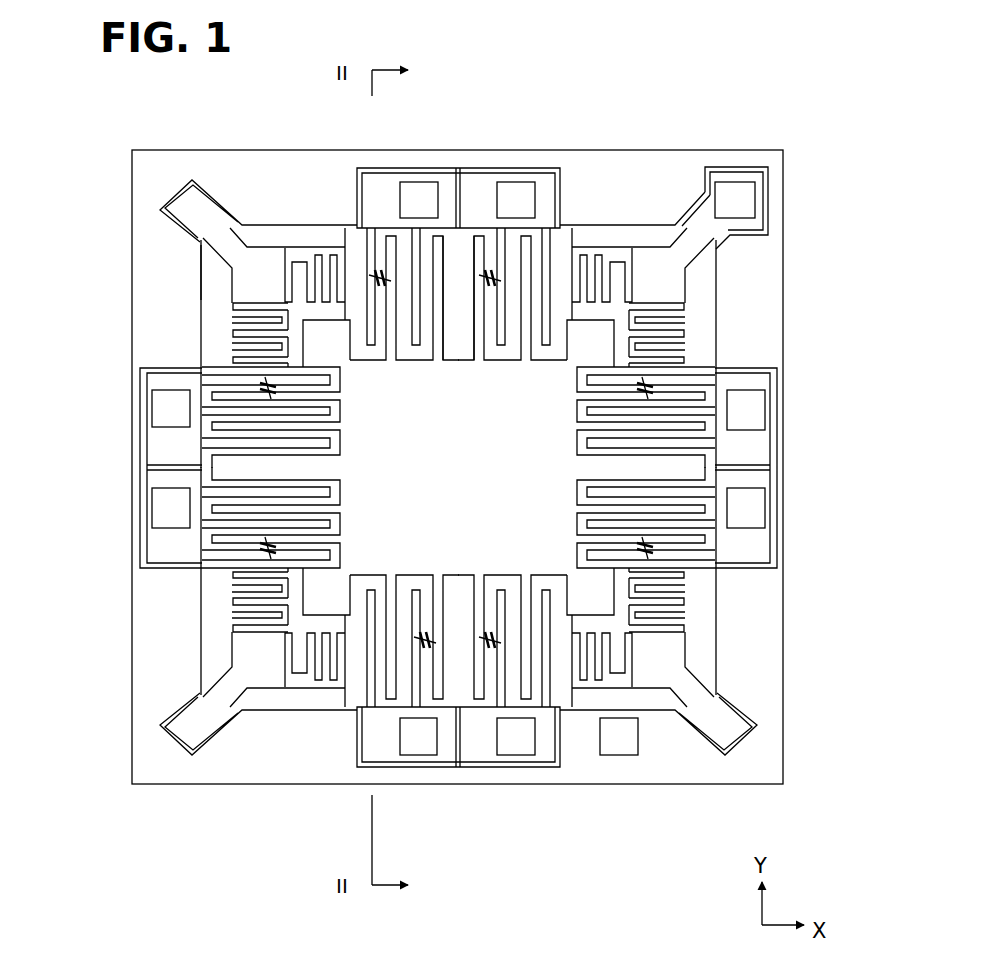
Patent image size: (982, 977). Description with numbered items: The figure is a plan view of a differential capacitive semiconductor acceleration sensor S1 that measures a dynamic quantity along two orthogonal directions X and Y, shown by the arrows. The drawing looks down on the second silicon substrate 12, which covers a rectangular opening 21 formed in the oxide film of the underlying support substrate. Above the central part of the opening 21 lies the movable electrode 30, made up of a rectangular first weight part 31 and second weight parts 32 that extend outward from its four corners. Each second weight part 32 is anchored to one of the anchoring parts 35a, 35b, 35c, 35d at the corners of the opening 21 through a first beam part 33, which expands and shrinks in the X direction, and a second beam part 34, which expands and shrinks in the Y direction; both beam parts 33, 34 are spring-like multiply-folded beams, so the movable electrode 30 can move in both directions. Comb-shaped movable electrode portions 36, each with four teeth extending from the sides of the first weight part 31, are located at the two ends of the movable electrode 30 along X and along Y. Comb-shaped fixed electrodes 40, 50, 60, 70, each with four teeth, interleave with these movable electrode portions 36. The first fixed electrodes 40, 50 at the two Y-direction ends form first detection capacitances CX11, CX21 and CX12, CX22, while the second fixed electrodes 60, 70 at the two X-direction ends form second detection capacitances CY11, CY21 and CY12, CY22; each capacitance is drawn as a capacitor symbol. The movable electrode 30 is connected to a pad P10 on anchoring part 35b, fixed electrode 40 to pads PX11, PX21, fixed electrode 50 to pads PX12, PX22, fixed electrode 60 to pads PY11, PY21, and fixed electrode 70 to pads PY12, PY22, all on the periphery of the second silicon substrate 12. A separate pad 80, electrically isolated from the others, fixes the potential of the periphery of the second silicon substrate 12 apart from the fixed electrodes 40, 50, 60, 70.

The acceleration sensor S1 is at (457, 476).
The second silicon substrate 12 is at (250, 144).
The opening 21 is at (206, 280).
The movable electrode 30 is at (518, 487).
The first weight part 31 is at (541, 402).
The second weight parts 32 is at (336, 350).
The first beam parts 33 is at (318, 256).
The second beam parts 34 is at (240, 328).
The anchoring part 35a is at (193, 196).
The anchoring part 35b is at (700, 200).
The anchoring part 35c is at (722, 760).
The anchoring part 35d is at (203, 760).
The movable electrode portions 36 is at (454, 292).
The fixed electrode 40 is at (495, 650).
The fixed electrode 50 is at (385, 286).
The fixed electrode 60 is at (655, 390).
The fixed electrode 70 is at (262, 392).
The pad 80 is at (625, 752).
The pad P10 is at (738, 190).
The pad PX11 is at (418, 746).
The pad PX12 is at (522, 202).
The pad PX21 is at (520, 742).
The pad PX22 is at (422, 199).
The pad PY11 is at (756, 510).
The pad PY12 is at (162, 412).
The pad PY21 is at (756, 412).
The pad PY22 is at (162, 507).
The first detection capacitance CX11 is at (440, 700).
The first detection capacitance CX12 is at (492, 300).
The first detection capacitance CX21 is at (498, 700).
The first detection capacitance CX22 is at (377, 300).
The second detection capacitance CY11 is at (668, 548).
The second detection capacitance CY12 is at (248, 388).
The second detection capacitance CY21 is at (668, 388).
The second detection capacitance CY22 is at (248, 548).